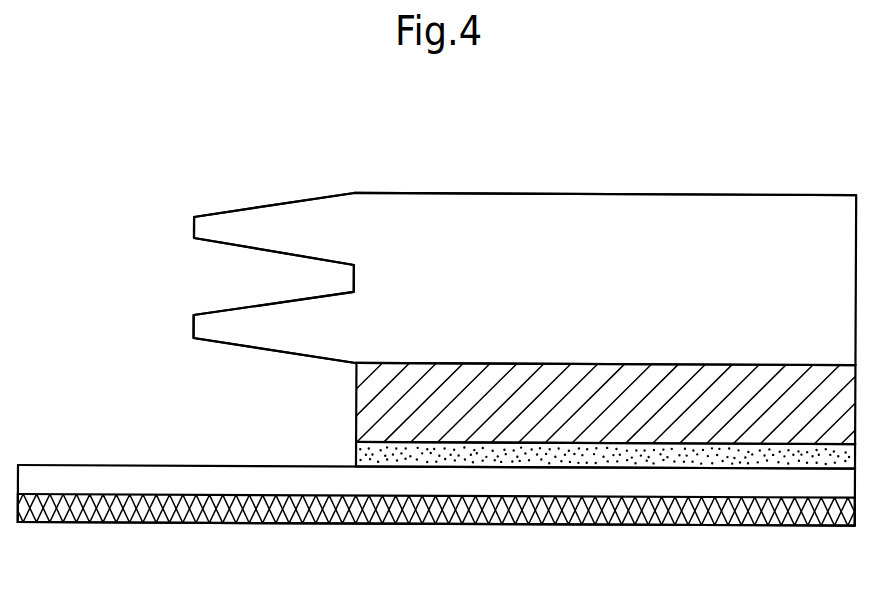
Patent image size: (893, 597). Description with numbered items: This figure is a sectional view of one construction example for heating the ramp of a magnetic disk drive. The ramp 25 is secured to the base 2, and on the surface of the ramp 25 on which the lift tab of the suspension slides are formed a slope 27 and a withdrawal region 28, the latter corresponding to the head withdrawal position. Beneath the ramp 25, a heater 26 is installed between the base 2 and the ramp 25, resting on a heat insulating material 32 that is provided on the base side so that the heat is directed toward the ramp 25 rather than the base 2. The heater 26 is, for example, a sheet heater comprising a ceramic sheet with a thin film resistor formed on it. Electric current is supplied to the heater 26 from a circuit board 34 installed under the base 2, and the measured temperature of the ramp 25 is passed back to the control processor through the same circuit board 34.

The base 2 is at (492, 482).
The ramp 25 is at (475, 208).
The heater 26 is at (802, 425).
The slope 27 is at (280, 202).
The withdrawal region 28 is at (660, 196).
The heat insulating material 32 is at (650, 453).
The circuit board 34 is at (318, 512).